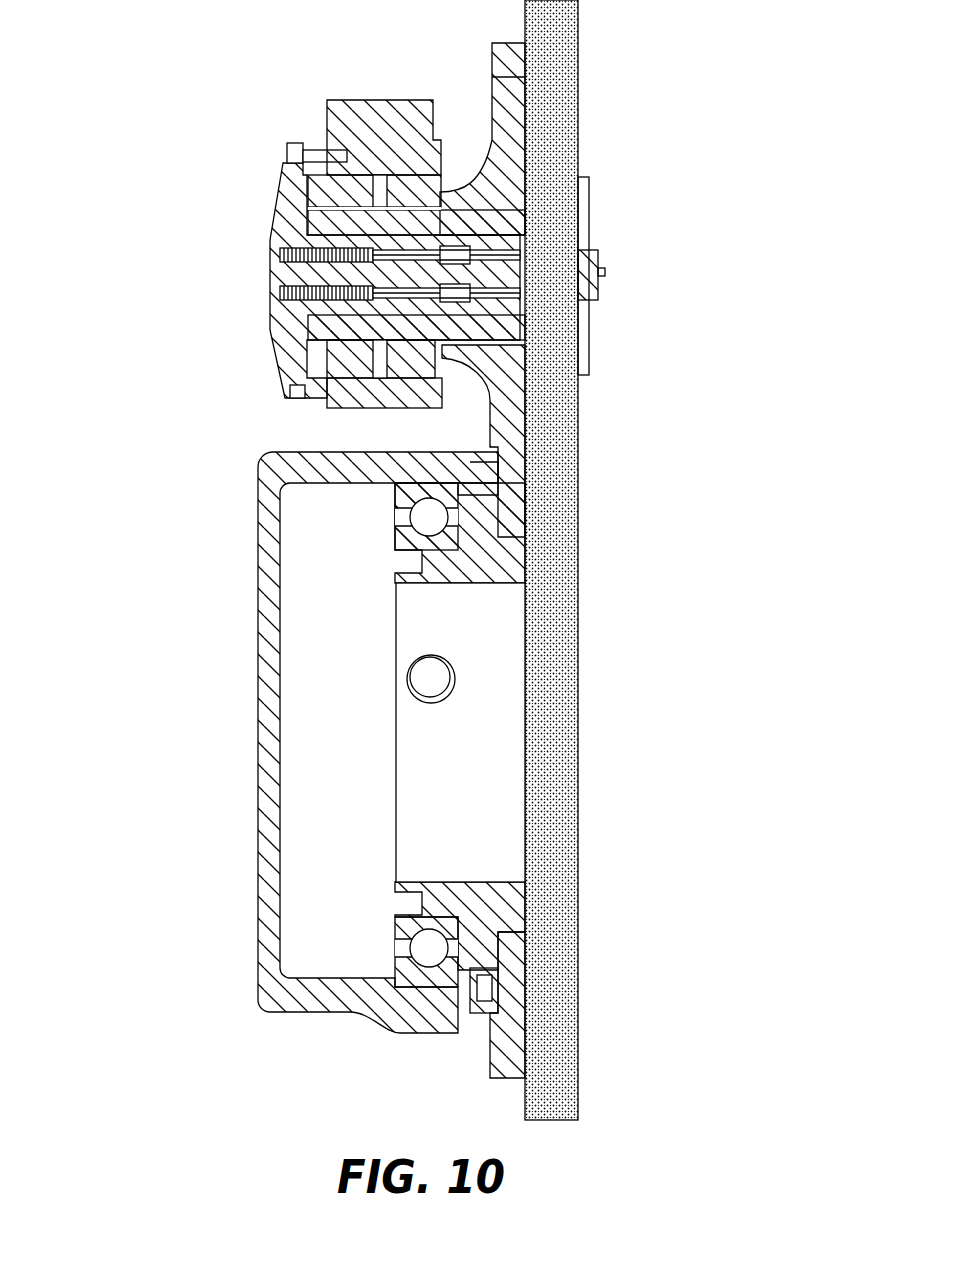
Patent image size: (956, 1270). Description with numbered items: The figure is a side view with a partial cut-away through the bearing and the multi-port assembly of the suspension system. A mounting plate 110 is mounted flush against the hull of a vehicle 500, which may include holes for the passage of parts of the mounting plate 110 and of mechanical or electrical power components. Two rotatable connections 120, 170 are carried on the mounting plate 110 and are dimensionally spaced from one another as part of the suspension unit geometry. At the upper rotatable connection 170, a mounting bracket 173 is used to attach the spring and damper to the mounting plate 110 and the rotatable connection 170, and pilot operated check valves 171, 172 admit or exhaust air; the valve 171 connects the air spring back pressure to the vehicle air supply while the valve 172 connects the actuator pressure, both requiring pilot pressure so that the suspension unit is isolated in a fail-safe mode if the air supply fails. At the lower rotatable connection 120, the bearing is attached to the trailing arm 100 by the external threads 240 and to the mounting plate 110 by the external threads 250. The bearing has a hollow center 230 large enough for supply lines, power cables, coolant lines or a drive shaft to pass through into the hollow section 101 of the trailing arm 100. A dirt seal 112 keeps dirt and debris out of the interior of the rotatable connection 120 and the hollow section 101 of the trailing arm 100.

The trailing arm 100 is at (265, 862).
The hollow section 101 is at (318, 918).
The mounting plate 110 is at (505, 343).
The dirt seal 112 is at (486, 1005).
The rotatable connection 120 is at (353, 768).
The rotatable connection 170 is at (308, 216).
The pilot operated check valve 171 is at (410, 245).
The pilot operated check valve 172 is at (303, 340).
The mounting bracket 173 is at (335, 108).
The hollow center 230 is at (485, 682).
The external threads 240 is at (412, 480).
The external threads 250 is at (487, 541).
The hull of a vehicle 500 is at (568, 468).